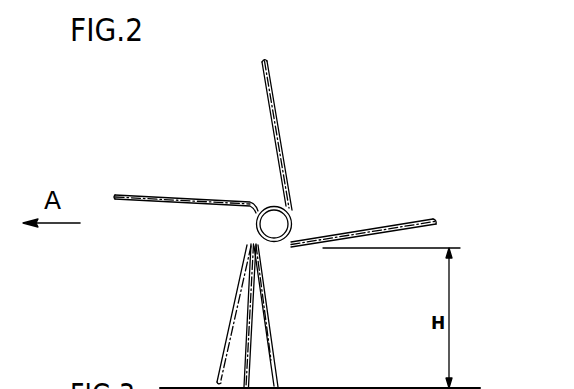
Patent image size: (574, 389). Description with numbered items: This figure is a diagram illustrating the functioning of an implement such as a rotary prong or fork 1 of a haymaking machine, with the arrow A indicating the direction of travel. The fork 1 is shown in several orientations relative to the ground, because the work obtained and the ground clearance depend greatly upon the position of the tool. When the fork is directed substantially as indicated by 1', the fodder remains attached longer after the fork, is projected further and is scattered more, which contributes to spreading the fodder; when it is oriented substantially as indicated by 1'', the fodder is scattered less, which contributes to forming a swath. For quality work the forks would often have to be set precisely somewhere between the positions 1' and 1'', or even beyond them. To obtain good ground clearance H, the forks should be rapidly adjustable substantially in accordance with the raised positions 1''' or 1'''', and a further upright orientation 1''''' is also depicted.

The fork 1 is at (294, 315).
The fork position 1' is at (212, 314).
The fork position 1'' is at (304, 316).
The fork position 1''' is at (186, 175).
The fork position 1'''' is at (363, 193).
The spring wire arm in upright position 1''''' is at (303, 135).